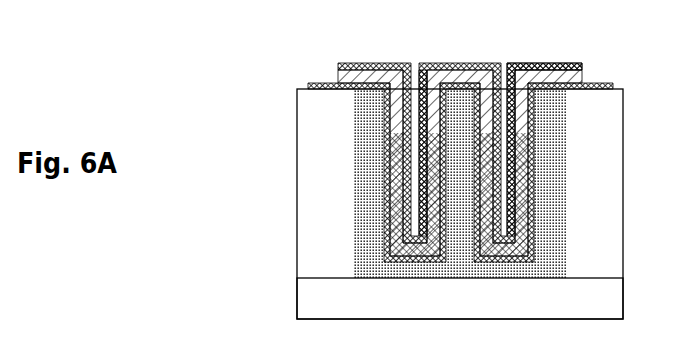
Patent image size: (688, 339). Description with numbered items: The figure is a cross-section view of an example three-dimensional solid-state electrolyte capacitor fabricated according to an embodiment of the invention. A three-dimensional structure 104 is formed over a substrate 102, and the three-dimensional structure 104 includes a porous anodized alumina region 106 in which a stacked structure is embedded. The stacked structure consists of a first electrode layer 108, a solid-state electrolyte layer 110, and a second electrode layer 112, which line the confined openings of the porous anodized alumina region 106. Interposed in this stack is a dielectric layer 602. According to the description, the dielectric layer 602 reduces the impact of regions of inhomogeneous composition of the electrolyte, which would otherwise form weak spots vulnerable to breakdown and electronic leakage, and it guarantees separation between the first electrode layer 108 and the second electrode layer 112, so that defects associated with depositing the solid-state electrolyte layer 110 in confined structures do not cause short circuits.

The substrate 102 is at (328, 292).
The 3D structure 104 is at (330, 117).
The porous anodized alumina region 106 is at (368, 203).
The first electrode layer 108 is at (322, 82).
The solid-state electrolyte layer 110 is at (382, 78).
The second electrode layer 112 is at (557, 63).
The dielectric layer 602 is at (472, 72).